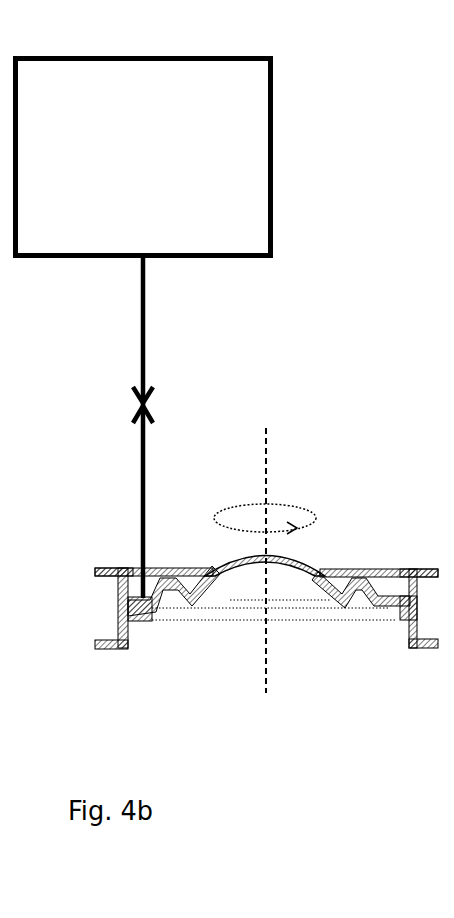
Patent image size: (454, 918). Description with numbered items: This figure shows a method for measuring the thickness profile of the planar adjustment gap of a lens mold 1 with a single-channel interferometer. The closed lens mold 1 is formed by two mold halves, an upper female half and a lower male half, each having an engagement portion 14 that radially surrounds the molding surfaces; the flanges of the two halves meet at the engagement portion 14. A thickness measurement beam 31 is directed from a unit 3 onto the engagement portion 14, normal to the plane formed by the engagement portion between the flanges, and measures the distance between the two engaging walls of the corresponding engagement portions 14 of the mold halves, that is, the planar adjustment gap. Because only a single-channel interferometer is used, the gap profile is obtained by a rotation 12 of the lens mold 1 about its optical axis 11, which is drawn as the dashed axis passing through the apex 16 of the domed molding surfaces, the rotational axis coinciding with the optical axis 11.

The lens mold 1 is at (249, 597).
The control unit 3 is at (87, 256).
The optical axis 11 is at (265, 658).
The rotation 12 is at (317, 518).
The engagement portion 14 is at (141, 634).
The apex 16 is at (265, 557).
The thickness measurement beam 31 is at (143, 372).